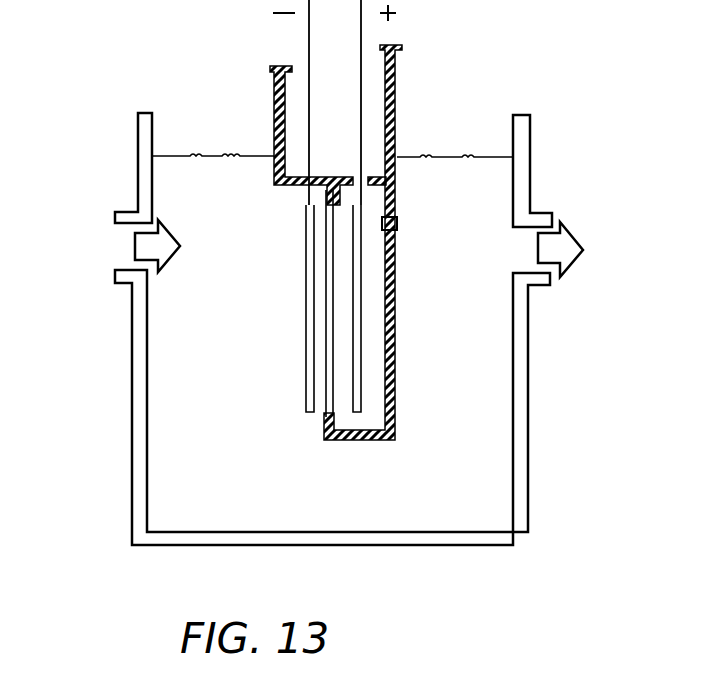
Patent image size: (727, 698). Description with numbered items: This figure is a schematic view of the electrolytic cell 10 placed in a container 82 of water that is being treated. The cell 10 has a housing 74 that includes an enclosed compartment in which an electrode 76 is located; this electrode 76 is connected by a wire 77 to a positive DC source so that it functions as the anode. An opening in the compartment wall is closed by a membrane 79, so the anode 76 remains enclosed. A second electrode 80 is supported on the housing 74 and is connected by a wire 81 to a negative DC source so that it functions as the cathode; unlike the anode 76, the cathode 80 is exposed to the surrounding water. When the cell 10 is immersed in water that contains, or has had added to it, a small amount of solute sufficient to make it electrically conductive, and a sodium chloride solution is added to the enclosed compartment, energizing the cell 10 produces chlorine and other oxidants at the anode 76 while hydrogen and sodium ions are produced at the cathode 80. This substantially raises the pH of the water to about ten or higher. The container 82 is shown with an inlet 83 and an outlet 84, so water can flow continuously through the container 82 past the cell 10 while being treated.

The cell 10 is at (401, 339).
The housing 74 is at (272, 125).
The electrode 76 is at (360, 405).
The wire 77 is at (392, 50).
The membrane 79 is at (325, 293).
The electrode 80 is at (303, 345).
The wire 81 is at (308, 42).
The container 82 is at (528, 383).
The inlet 83 is at (128, 270).
The outlet 84 is at (548, 286).